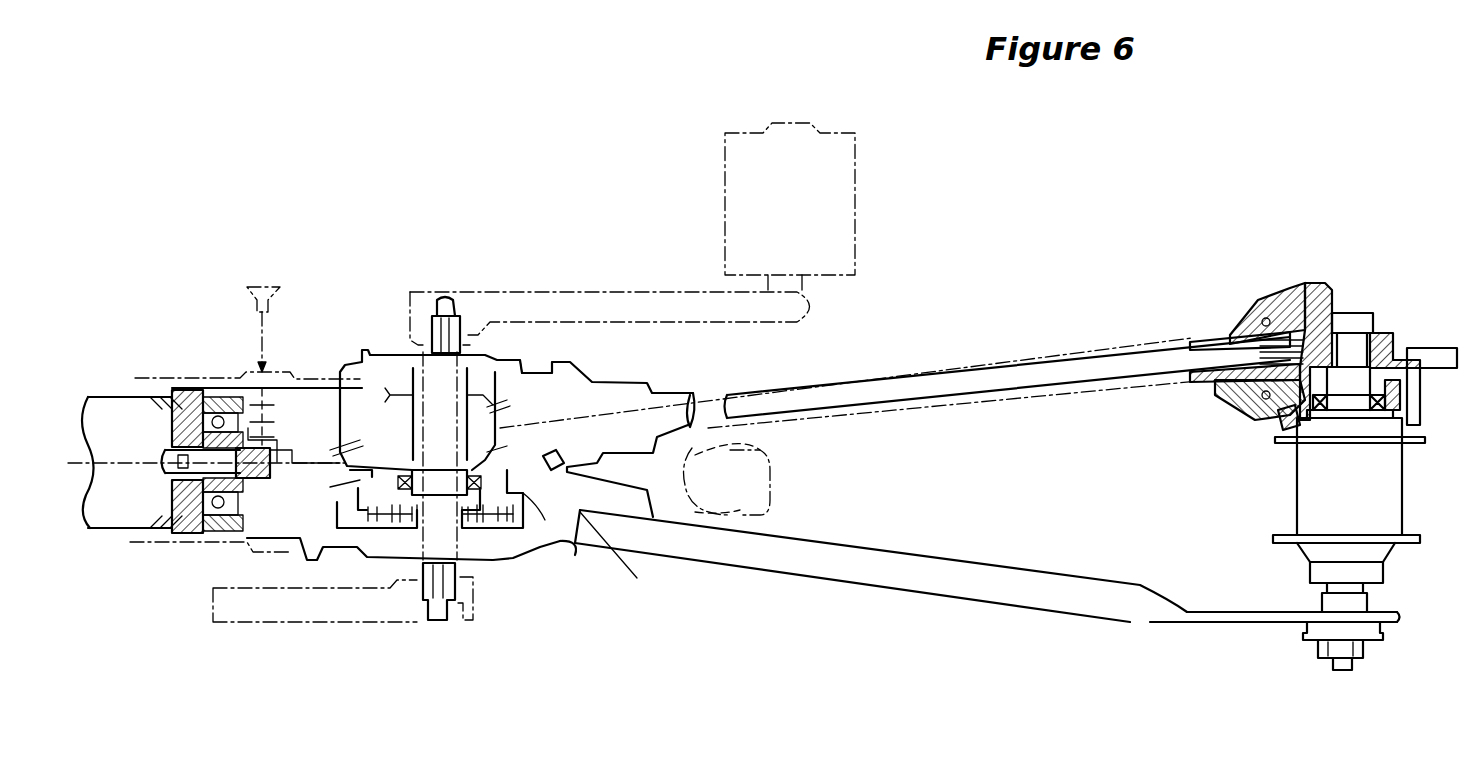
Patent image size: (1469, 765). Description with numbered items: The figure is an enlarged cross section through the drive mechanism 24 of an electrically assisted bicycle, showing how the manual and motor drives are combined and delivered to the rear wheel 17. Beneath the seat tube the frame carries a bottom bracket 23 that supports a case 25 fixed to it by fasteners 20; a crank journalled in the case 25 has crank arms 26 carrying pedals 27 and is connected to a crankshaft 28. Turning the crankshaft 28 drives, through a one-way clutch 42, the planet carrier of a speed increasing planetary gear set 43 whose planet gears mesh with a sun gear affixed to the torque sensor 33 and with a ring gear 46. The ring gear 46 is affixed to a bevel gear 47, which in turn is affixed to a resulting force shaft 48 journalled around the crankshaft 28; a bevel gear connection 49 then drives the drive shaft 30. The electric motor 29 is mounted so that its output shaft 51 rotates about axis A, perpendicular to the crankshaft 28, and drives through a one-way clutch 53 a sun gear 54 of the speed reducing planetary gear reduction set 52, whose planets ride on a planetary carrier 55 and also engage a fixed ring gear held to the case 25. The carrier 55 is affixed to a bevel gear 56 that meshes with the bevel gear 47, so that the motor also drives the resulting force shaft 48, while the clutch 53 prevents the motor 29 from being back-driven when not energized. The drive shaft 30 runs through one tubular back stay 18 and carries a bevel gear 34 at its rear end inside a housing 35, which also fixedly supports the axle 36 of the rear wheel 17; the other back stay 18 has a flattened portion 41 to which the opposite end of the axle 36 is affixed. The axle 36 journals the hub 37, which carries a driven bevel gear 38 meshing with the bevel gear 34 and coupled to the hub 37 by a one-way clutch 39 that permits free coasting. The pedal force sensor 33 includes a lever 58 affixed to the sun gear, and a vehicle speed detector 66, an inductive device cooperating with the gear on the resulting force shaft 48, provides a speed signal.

The axis A is at (132, 440).
The rear wheel 17 is at (720, 520).
The back stay 18 is at (912, 592).
The fasteners 20 is at (265, 283).
The bottom bracket 23 is at (163, 372).
The drive mechanism 24 is at (300, 262).
The case 25 is at (568, 543).
The crank arms 26 is at (380, 623).
The pedals 27 is at (857, 223).
The crankshaft 28 is at (438, 622).
The electric motor 29 is at (88, 530).
The drive shaft 30 is at (1020, 363).
The torque sensor 33 is at (272, 516).
The bevel gear 34 is at (1307, 303).
The housing 35 is at (1287, 287).
The axle 36 is at (1340, 672).
The hub 37 is at (1297, 507).
The driven bevel gear 38 is at (1277, 417).
The one-way clutch 39 is at (1320, 425).
The flattened portion 41 is at (1258, 625).
The one-way clutch 42 is at (497, 432).
The planetary gear set 43 is at (478, 526).
The ring gear 46 is at (530, 510).
The bevel gear 47 is at (628, 558).
The resulting force shaft 48 is at (400, 352).
The bevel gear connection 49 is at (508, 380).
The output shaft 51 is at (173, 440).
The planetary gear reduction set 52 is at (296, 406).
The one-way clutch 53 is at (204, 460).
The sun gear 54 is at (318, 506).
The planetary carrier 55 is at (282, 456).
The bevel gear 56 is at (364, 360).
The lever 58 is at (366, 480).
The vehicle speed detector 66 is at (562, 457).